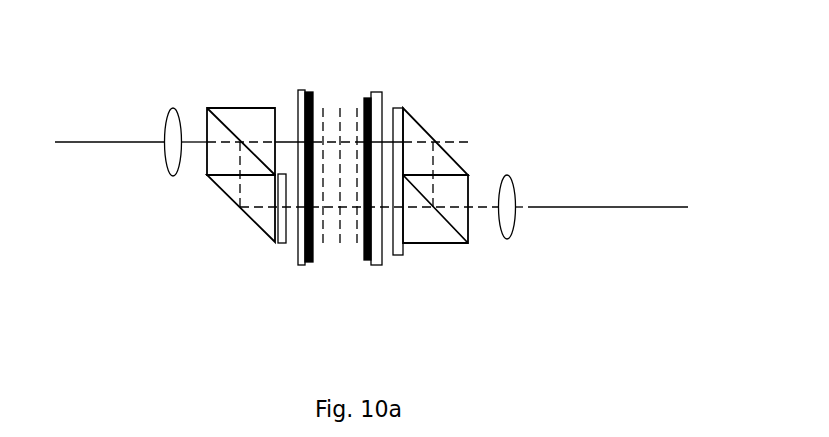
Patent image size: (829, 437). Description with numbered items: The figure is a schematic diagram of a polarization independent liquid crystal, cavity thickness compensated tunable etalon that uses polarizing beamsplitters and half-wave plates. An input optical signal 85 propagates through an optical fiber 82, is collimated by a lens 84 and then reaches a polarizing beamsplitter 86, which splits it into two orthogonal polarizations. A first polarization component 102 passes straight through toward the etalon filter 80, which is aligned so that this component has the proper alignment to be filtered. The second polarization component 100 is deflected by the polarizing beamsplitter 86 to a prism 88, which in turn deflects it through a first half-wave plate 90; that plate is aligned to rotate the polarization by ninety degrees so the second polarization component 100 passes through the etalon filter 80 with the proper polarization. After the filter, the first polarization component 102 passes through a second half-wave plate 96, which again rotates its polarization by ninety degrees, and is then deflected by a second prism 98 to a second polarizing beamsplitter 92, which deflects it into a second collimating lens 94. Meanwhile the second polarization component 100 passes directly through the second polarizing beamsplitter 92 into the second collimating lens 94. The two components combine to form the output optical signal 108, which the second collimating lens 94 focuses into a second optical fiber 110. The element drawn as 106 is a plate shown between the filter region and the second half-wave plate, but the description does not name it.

The etalon filter 80 is at (342, 84).
The optical fiber 82 is at (70, 141).
The lens 84 is at (165, 129).
The input optical signal 85 is at (193, 140).
The polarizing beamsplitter 86 is at (248, 107).
The prism 88 is at (257, 228).
The first half-wave plate 90 is at (283, 248).
The second polarizing beamsplitter 92 is at (433, 245).
The second collimating lens 94 is at (517, 192).
The second half-wave plate 96 is at (394, 108).
The second prism 98 is at (448, 155).
The second polarization component 100 is at (240, 162).
The first polarization component 102 is at (284, 141).
The analyzer plate 106 is at (395, 252).
The output optical signal 108 is at (478, 208).
The second optical fiber 110 is at (582, 203).